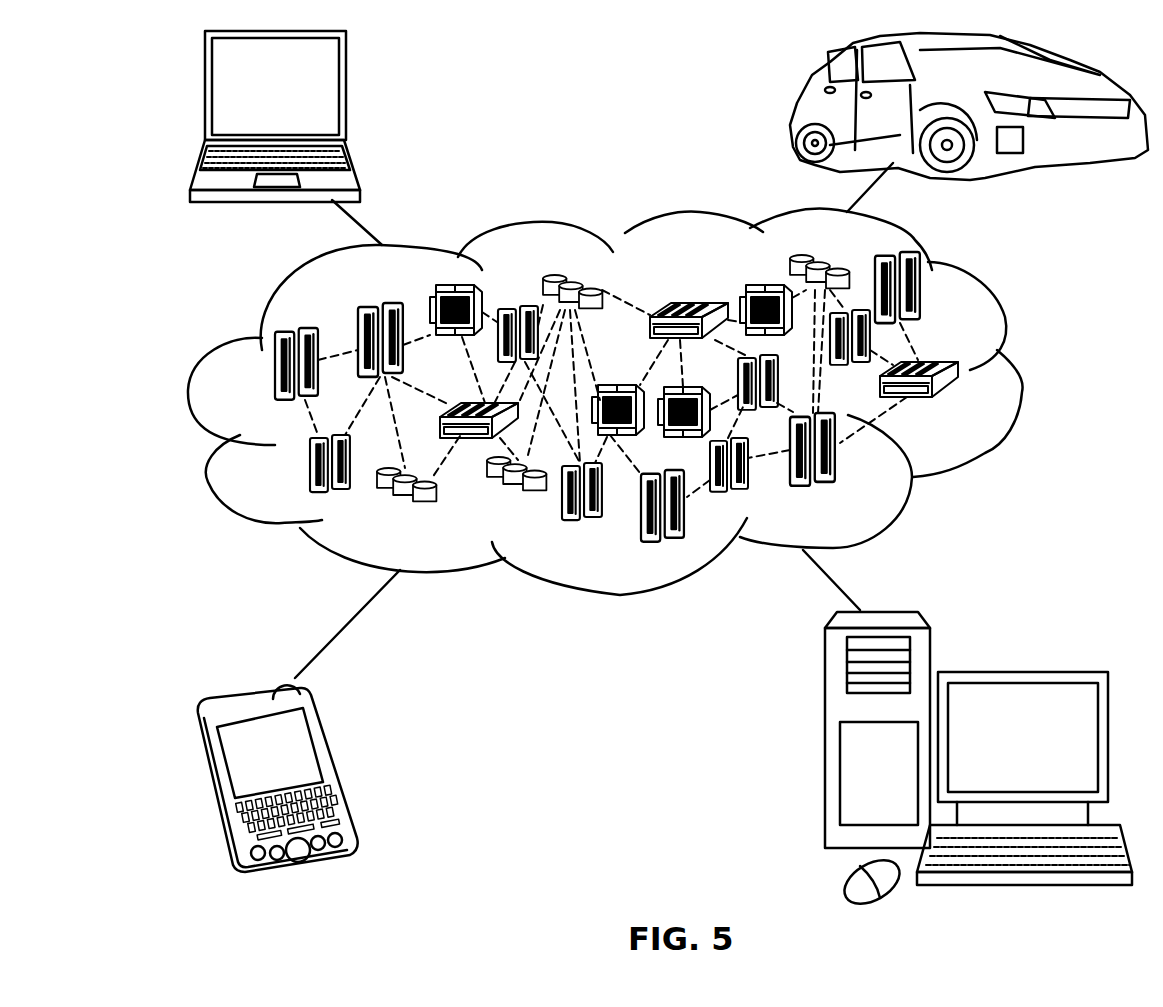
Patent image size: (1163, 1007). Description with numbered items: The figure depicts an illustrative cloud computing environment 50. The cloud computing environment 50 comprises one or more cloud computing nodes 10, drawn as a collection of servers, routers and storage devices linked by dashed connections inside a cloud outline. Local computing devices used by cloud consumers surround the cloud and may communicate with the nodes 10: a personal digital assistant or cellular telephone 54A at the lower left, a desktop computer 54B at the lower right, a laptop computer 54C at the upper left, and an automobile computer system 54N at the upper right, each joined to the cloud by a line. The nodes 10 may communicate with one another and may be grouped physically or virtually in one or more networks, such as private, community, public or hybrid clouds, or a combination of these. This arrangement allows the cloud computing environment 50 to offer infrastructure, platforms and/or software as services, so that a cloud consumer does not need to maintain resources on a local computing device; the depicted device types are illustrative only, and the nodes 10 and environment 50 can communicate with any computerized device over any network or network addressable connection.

The cloud computing node 10 is at (968, 406).
The cloud computing environment 50 is at (1018, 375).
The personal digital assistant (PDA) or cellular telephone 54A is at (337, 767).
The desktop computer 54B is at (1020, 672).
The laptop computer 54C is at (347, 93).
The automobile computer system 54N is at (795, 108).